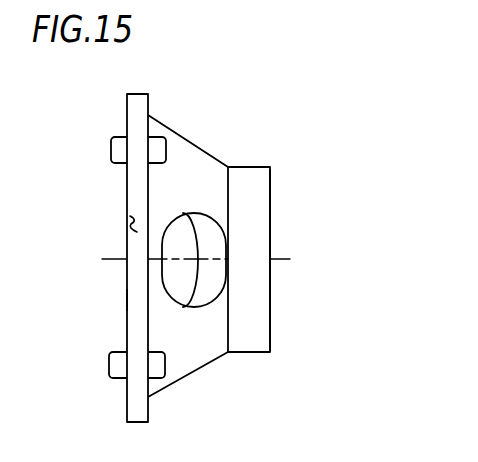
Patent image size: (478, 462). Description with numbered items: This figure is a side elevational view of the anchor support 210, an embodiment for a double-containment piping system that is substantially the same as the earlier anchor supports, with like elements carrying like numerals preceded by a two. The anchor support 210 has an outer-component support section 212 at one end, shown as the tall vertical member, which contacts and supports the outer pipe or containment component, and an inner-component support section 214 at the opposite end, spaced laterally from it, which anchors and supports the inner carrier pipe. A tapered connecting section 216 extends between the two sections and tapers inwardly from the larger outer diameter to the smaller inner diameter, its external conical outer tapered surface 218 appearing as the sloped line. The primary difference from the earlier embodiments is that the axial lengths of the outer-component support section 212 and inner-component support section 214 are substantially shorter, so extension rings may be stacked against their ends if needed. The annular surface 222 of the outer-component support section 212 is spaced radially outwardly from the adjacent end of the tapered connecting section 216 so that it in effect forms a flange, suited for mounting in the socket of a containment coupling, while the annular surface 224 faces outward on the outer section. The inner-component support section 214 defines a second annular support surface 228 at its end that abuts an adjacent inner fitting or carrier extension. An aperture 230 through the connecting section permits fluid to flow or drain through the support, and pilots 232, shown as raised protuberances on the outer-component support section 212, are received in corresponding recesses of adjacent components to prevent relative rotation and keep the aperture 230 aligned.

The anchor support 210 is at (219, 113).
The outer-component support section 212 is at (144, 89).
The inner-component support section 214 is at (254, 161).
The tapered connecting section 216 is at (168, 121).
The outer tapered surface 218 is at (197, 371).
The annular surface 222 is at (128, 221).
The annular surface 224 is at (127, 300).
The second annular support surface 228 is at (271, 228).
The aperture 230 is at (197, 272).
The pilot 232 is at (148, 165).